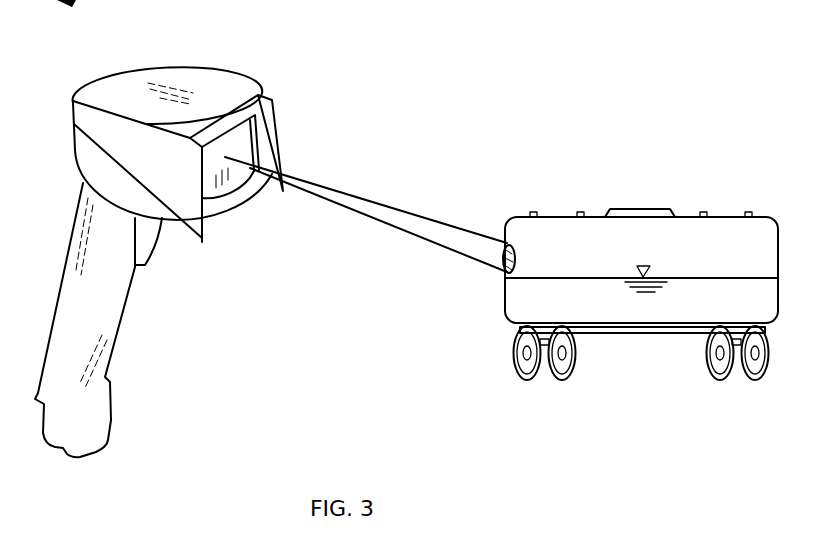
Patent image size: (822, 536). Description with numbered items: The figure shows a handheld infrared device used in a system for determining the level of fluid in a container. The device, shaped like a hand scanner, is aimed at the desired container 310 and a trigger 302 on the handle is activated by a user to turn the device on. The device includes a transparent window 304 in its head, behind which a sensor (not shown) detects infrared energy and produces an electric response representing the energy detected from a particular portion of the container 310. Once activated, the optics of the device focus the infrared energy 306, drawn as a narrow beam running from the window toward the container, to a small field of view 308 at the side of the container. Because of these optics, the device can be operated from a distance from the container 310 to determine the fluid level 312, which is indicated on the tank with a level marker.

The trigger 302 is at (148, 257).
The transparent window 304 is at (238, 142).
The infrared energy 306 is at (341, 196).
The small field of view 308 is at (504, 226).
The container 310 is at (590, 217).
The fluid level 312 is at (683, 303).